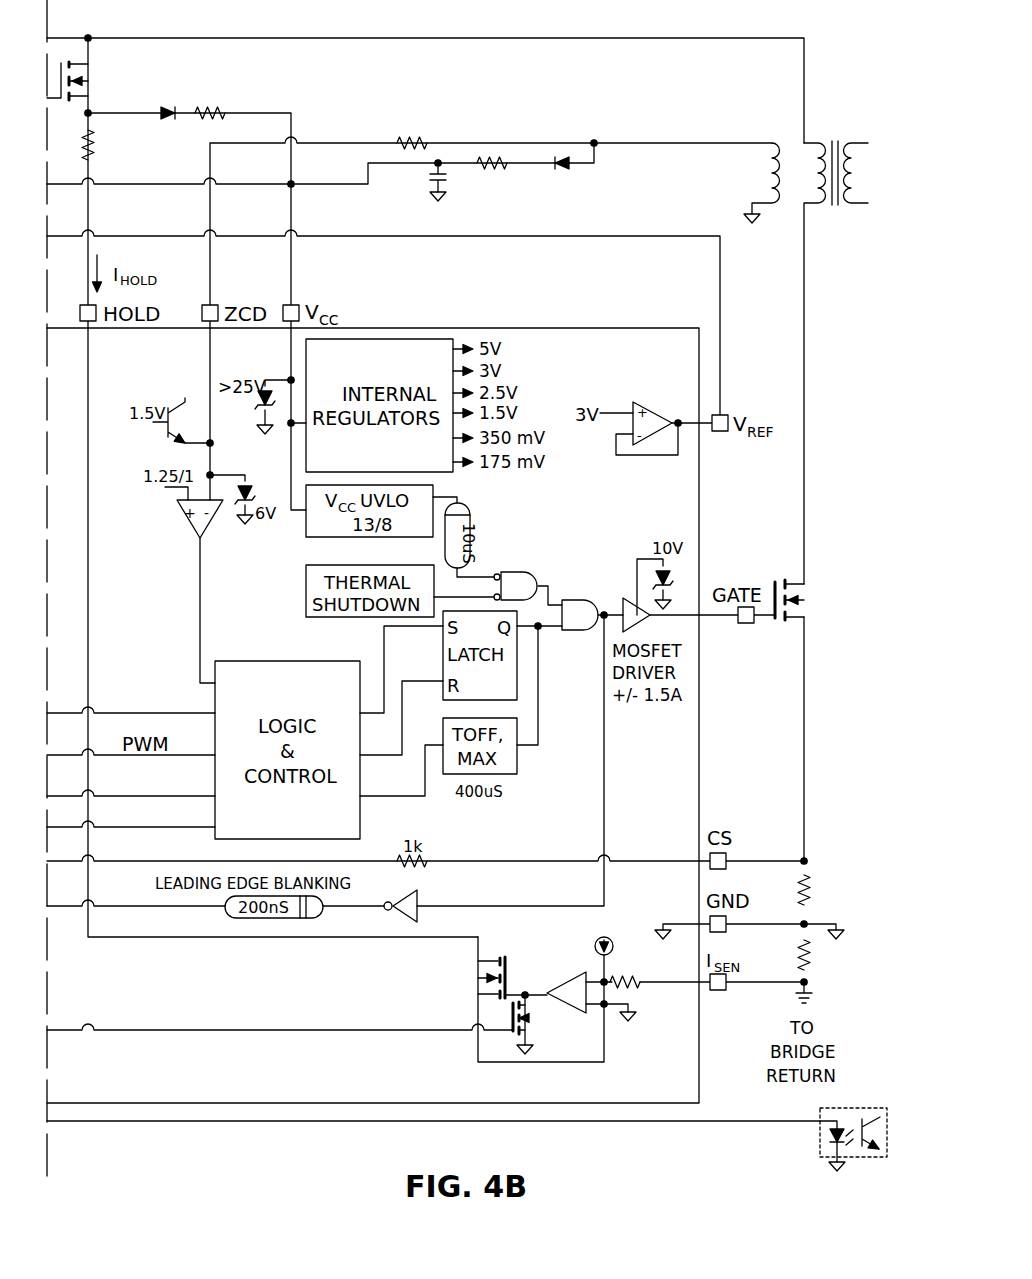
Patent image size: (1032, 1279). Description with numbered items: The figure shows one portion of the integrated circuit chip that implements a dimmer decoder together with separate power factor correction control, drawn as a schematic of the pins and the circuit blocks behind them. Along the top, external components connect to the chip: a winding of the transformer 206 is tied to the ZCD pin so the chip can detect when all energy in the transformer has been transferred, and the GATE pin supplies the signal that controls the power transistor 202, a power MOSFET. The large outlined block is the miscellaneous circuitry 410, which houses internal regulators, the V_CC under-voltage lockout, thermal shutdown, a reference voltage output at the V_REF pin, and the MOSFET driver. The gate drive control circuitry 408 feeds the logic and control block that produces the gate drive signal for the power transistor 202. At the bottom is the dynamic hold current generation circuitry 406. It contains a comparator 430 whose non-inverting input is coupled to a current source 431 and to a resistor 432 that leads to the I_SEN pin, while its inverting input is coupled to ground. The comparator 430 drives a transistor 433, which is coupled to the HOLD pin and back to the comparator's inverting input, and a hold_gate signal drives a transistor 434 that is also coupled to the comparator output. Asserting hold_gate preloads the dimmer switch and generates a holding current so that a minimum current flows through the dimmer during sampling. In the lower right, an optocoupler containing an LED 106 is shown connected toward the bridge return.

The LED 106 is at (831, 1142).
The power transistor 202 is at (796, 622).
The transformer 206 is at (836, 124).
The dynamic hold current generation circuitry 406 is at (378, 994).
The gate drive control circuitry 408 is at (198, 697).
The miscellaneous circuitry 410 is at (530, 345).
The comparator 430 is at (583, 970).
The current source 431 is at (610, 938).
The resistor 432 is at (660, 972).
The transistor 433 is at (508, 966).
The transistor 434 is at (527, 1016).